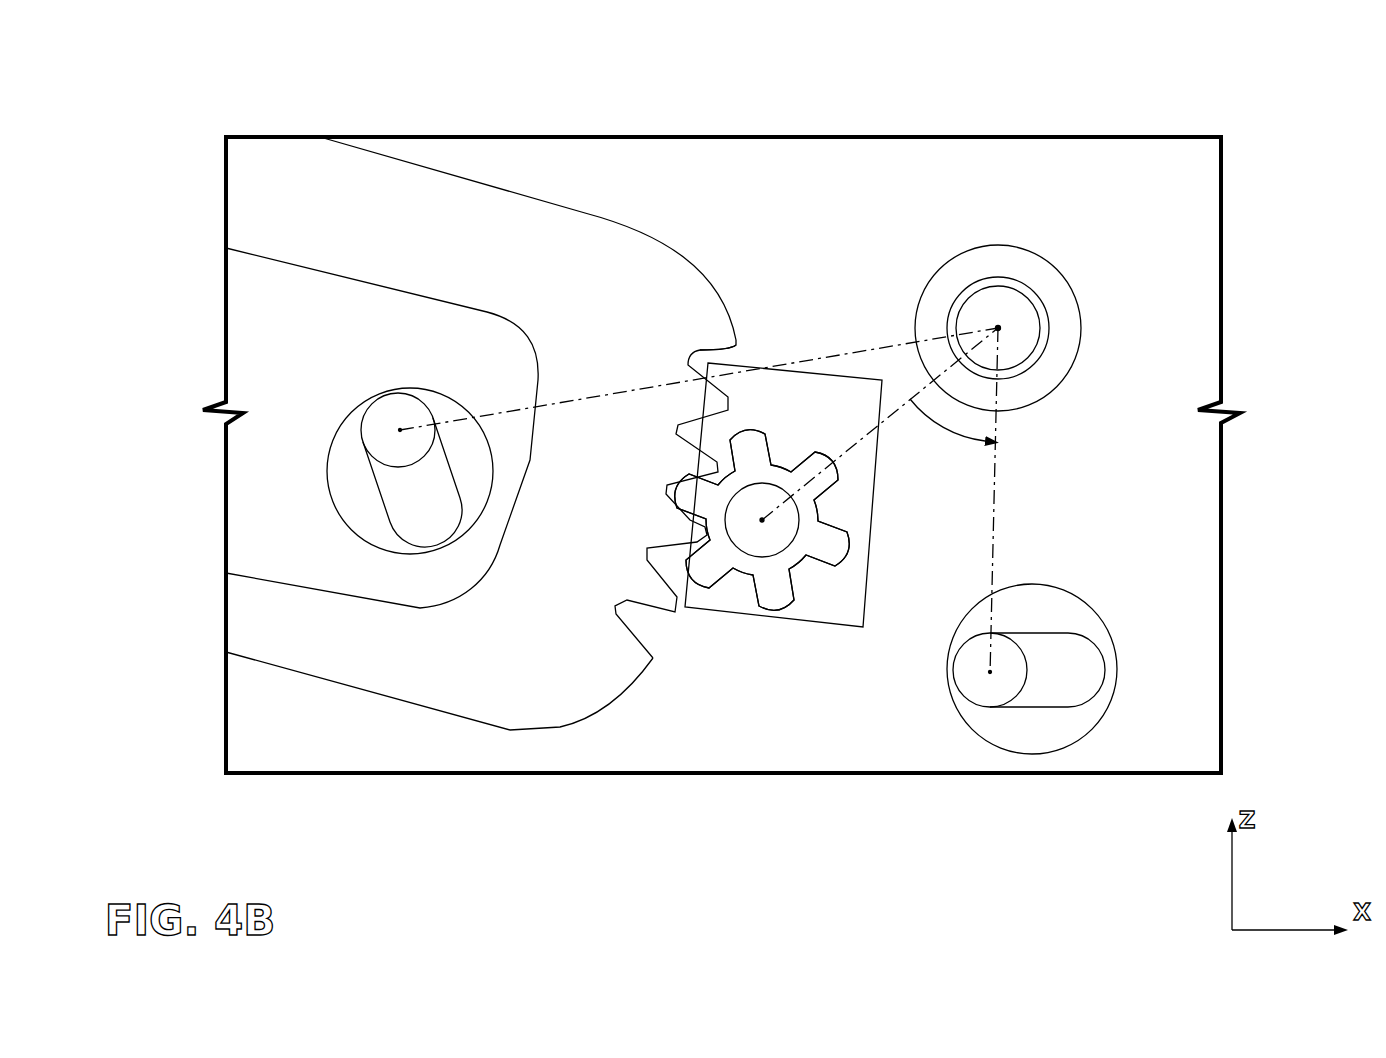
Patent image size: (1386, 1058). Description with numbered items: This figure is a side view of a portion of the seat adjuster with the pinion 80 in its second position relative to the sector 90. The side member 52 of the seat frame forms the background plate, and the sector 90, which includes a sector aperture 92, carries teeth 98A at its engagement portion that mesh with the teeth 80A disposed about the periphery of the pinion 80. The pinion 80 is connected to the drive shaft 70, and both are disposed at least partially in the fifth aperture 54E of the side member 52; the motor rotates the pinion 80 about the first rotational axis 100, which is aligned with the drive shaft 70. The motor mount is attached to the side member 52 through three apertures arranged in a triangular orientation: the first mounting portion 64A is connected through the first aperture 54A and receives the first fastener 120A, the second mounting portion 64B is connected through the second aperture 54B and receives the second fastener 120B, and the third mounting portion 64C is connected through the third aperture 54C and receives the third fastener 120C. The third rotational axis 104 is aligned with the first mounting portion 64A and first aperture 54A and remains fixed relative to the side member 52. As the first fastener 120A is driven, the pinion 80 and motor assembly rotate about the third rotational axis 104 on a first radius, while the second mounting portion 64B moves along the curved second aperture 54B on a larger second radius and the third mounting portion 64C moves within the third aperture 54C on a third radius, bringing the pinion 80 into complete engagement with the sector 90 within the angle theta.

The side member 52 is at (943, 186).
The sector 90 is at (672, 186).
The sector aperture 92 is at (270, 333).
The teeth 98A is at (690, 467).
The fifth aperture 54E is at (740, 362).
The third aperture 54C is at (375, 472).
The third mounting portion 64C is at (400, 442).
The third fastener 120C is at (398, 423).
The pinion 80 is at (846, 501).
The teeth 80A is at (745, 448).
The drive shaft 70 is at (748, 537).
The first rotational axis 100 is at (764, 540).
The first aperture 54A is at (1042, 300).
The first mounting portion 64A is at (1015, 327).
The third rotational axis 104 is at (1012, 336).
The first fastener 120A is at (1004, 312).
The second aperture 54B is at (1068, 632).
The second mounting portion 64B is at (977, 675).
The second fastener 120B is at (996, 690).